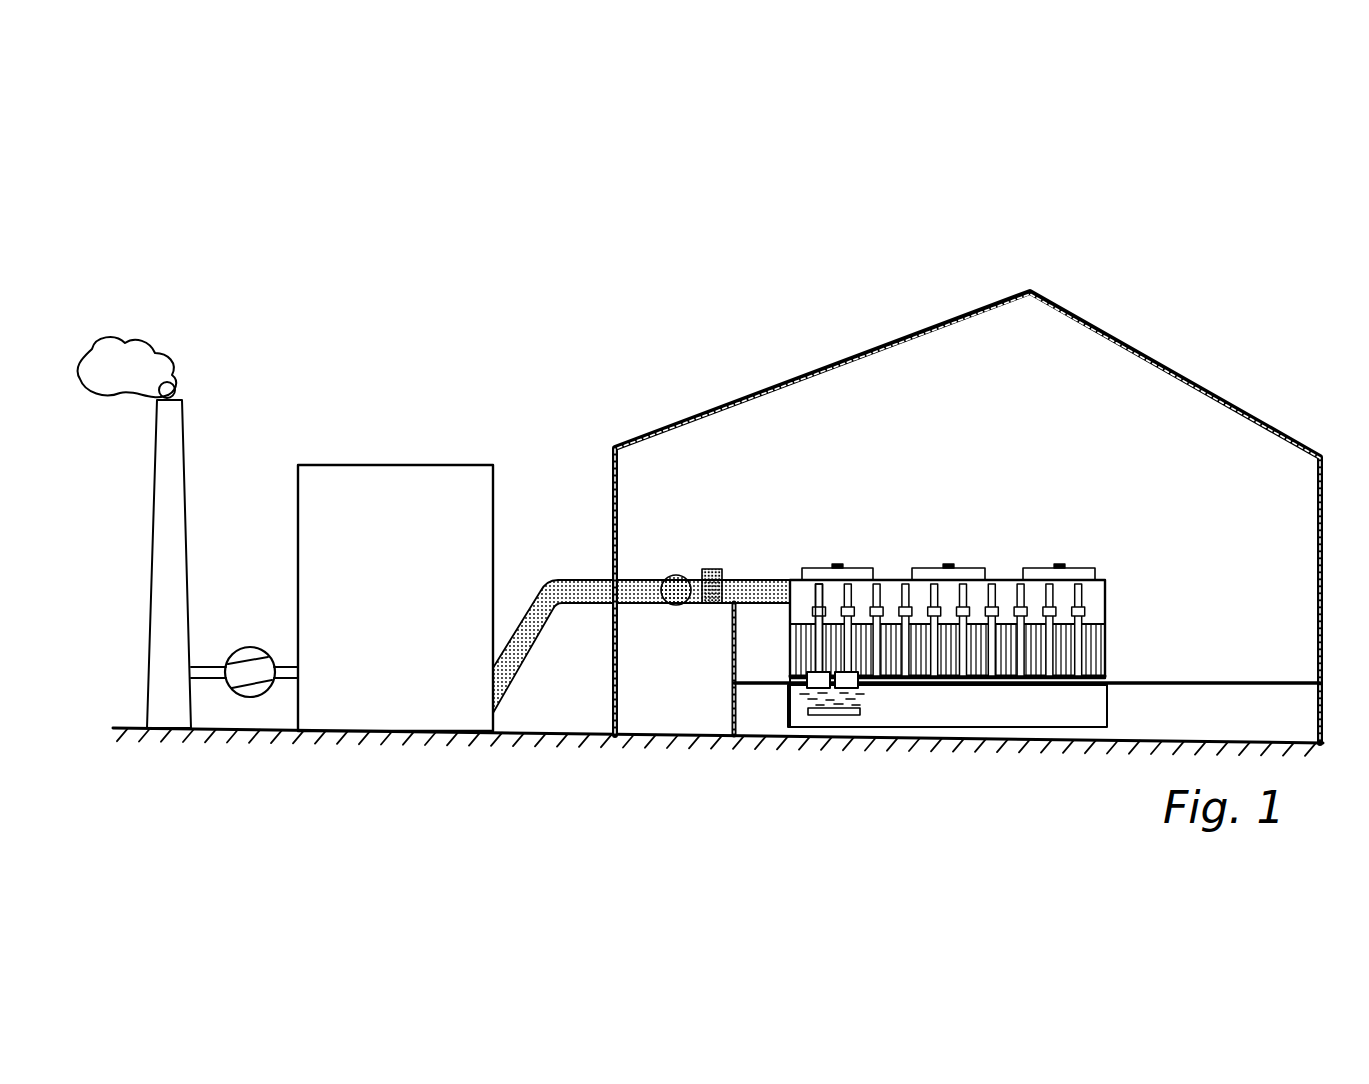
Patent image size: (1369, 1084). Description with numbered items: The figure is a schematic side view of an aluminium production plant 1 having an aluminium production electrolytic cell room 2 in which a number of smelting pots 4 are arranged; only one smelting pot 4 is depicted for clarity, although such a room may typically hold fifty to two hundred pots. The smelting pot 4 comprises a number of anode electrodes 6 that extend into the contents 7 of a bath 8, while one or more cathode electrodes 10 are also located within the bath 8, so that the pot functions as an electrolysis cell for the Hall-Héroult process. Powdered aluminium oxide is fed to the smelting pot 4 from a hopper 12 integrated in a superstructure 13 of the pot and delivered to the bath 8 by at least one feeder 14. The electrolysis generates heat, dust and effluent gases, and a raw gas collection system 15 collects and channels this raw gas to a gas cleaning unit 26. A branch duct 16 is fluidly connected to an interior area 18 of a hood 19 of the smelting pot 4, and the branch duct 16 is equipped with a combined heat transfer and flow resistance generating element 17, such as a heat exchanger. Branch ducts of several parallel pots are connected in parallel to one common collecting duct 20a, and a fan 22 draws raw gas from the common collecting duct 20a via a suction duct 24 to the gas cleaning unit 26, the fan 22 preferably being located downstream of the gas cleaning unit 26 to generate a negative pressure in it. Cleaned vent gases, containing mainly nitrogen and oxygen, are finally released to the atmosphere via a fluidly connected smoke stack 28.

The aluminium production plant 1 is at (780, 236).
The aluminium production electrolytic cell room 2 is at (1250, 411).
The smelting pot 4 is at (790, 643).
The anode electrode 6 is at (790, 688).
The contents of bath 7 is at (816, 699).
The bath 8 is at (1040, 711).
The cathode electrode 10 is at (838, 716).
The hopper 12 is at (868, 568).
The superstructure 13 is at (885, 579).
The feeder 14 is at (815, 631).
The raw gas collection system 15 is at (686, 619).
The branch duct 16 is at (778, 579).
The combined heat transfer and flow resistance generating element 17 is at (708, 568).
The interior area 18 is at (800, 585).
The hood 19 is at (1003, 579).
The common collecting duct 20a is at (675, 575).
The fan 22 is at (250, 647).
The suction duct 24 is at (595, 579).
The gas cleaning unit 26 is at (479, 448).
The smoke stack 28 is at (185, 452).